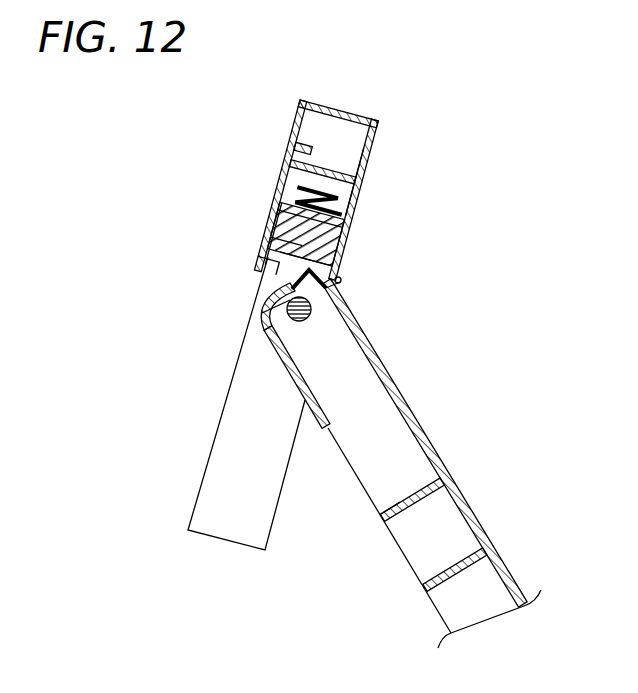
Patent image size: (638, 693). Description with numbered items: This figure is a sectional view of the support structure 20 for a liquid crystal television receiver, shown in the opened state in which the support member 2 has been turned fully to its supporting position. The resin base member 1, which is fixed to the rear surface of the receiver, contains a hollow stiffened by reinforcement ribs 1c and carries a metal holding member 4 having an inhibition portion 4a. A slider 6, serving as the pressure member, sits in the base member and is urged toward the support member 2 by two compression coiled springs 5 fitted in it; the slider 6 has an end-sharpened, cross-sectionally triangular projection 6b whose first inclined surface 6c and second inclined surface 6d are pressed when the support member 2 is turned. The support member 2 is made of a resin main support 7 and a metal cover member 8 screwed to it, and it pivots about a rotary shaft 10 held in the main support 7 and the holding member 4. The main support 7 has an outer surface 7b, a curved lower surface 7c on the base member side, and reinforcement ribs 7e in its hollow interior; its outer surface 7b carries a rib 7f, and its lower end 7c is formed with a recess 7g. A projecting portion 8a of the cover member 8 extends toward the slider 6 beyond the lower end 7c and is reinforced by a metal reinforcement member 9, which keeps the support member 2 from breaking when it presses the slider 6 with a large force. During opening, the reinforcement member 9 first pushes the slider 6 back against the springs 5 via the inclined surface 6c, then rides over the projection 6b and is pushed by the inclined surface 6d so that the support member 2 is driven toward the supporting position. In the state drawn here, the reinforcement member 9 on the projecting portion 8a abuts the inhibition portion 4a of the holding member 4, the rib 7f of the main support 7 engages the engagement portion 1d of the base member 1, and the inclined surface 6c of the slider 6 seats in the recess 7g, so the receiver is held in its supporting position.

The support structure 20 is at (388, 95).
The base member 1 is at (372, 137).
The reinforcement ribs 1c is at (360, 190).
The engagement portion 1d is at (340, 281).
The support member 2 is at (500, 556).
The holding member 4 is at (293, 193).
The inhibition portion 4a is at (257, 270).
The compression coiled springs 5 is at (290, 172).
The slider 6 is at (347, 228).
The cross-sectionally triangular projection 6b is at (283, 240).
The inclined surface 6c is at (262, 313).
The inclined surface 6d is at (285, 253).
The main support 7 is at (432, 434).
The outer surface 7b is at (463, 492).
The lower surface 7c is at (338, 277).
The reinforcement ribs 7e is at (413, 493).
The rib 7f is at (343, 287).
The recess 7g is at (308, 243).
The cover member 8 is at (290, 378).
The projecting portion 8a is at (265, 289).
The reinforcement member 9 is at (262, 256).
The rotary shaft 10 is at (288, 326).